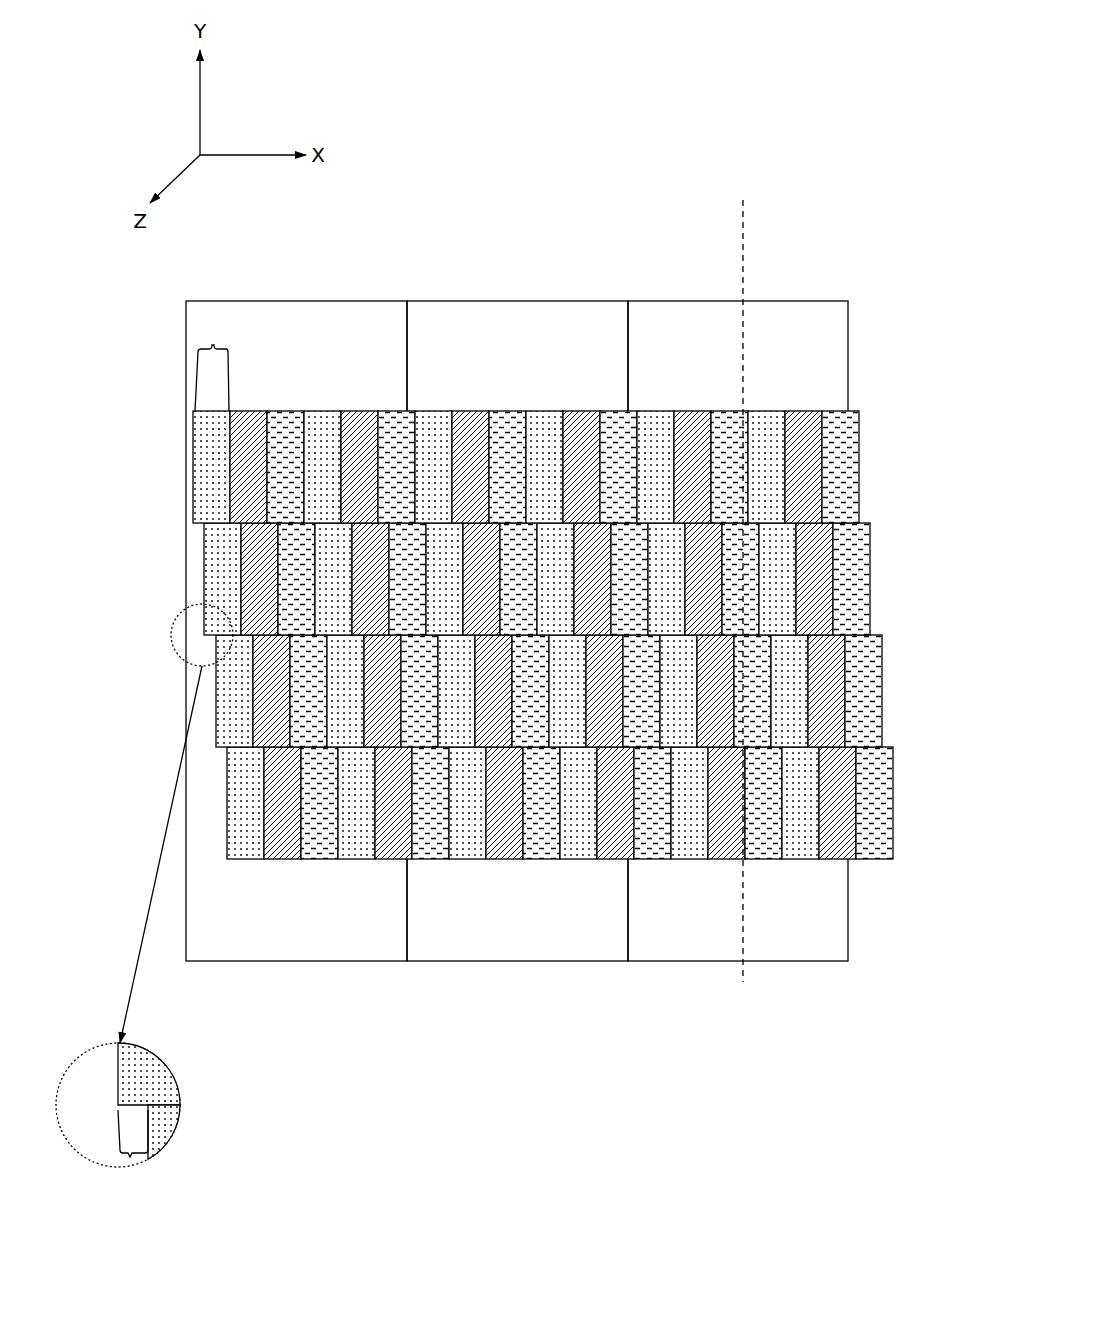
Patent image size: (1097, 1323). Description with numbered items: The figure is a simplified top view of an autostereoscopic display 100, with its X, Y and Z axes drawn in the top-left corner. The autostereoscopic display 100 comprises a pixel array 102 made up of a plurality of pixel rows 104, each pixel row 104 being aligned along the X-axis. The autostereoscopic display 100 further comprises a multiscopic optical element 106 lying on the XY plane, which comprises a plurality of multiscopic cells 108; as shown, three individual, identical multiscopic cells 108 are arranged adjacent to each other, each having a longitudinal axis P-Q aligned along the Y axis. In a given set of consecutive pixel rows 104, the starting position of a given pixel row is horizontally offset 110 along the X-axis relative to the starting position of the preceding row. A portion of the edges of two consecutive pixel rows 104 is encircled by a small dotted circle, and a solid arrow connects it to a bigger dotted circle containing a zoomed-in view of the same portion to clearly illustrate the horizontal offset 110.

The autostereoscopic display 100 is at (140, 263).
The pixel array 102 is at (900, 412).
The pixel rows 104 is at (213, 345).
The multiscopic optical element 106 is at (519, 709).
The multiscopic cells 108 is at (296, 673).
The horizontal offset 110 is at (130, 1157).